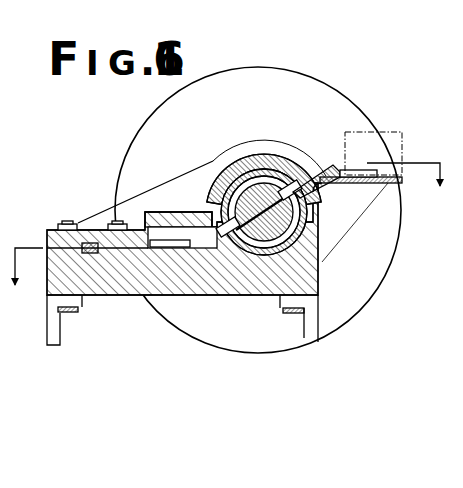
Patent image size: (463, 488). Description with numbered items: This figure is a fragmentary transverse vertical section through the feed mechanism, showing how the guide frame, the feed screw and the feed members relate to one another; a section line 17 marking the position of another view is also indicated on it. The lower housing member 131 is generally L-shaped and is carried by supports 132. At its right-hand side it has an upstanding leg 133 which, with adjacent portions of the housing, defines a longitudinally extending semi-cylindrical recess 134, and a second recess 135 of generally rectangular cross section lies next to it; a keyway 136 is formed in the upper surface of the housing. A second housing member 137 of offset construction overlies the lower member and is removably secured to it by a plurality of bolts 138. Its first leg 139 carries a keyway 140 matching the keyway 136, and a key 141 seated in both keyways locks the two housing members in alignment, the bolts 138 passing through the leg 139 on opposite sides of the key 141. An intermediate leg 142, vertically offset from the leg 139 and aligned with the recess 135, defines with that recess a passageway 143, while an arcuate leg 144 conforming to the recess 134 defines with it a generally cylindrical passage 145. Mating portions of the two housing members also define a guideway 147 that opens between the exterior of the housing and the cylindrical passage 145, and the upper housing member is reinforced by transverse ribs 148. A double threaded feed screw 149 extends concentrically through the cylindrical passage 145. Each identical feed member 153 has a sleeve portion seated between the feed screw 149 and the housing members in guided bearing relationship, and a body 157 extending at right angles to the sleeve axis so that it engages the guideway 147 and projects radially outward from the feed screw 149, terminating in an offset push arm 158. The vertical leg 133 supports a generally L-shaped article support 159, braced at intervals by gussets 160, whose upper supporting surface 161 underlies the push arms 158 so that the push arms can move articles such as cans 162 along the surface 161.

The section line 17- 17 is at (228, 240).
The lower housing member 131 is at (132, 288).
The supports 132 is at (61, 334).
The upstanding leg 133 is at (314, 232).
The semi-cylindrical recess 134 is at (250, 270).
The second recess 135 is at (175, 278).
The keyway 136 is at (90, 268).
The second housing member 137 is at (170, 207).
The bolts 138 is at (68, 222).
The first leg 139 is at (50, 232).
The keyway 140 is at (114, 285).
The key 141 is at (95, 250).
The intermediate leg 142 is at (158, 208).
The passageway 143 is at (137, 212).
The arcuate leg 144 is at (258, 156).
The cylindrical passage 145 is at (290, 182).
The guideway 147 is at (335, 162).
The transverse ribs 148 is at (232, 168).
The double threaded feed screw 149 is at (316, 266).
The feed member 153 is at (338, 160).
The body 157 is at (322, 199).
The push arm 158 is at (360, 170).
The article support 159 is at (364, 184).
The gussets 160 is at (344, 214).
The upper supporting surface 161 is at (408, 170).
The cans 162 is at (398, 128).